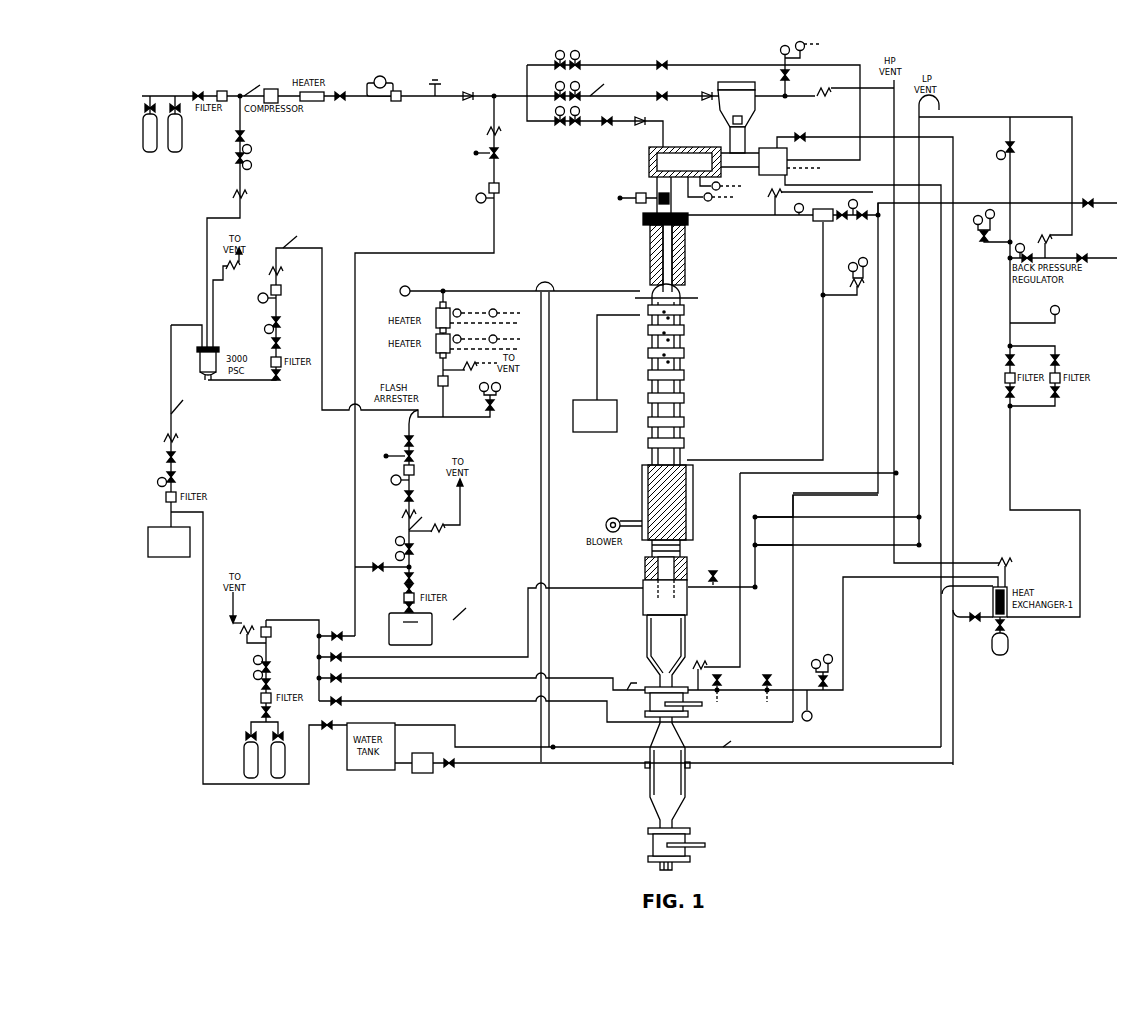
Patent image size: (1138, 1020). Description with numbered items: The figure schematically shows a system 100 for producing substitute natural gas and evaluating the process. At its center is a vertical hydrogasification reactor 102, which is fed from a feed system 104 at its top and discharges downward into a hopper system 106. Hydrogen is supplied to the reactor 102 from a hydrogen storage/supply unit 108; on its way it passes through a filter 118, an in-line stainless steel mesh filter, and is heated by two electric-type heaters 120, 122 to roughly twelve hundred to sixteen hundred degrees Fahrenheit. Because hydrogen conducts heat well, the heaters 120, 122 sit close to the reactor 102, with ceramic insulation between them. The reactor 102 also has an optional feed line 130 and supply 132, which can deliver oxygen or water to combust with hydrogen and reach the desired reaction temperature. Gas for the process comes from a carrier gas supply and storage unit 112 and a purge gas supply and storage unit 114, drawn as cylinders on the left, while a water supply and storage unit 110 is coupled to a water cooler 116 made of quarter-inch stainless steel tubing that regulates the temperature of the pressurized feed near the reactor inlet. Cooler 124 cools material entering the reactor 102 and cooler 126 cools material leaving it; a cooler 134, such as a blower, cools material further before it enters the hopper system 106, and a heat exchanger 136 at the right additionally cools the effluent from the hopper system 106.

The system 100 is at (1008, 70).
The hydrogasification reactor 102 is at (705, 278).
The feed system 104 is at (785, 108).
The hopper system 106 is at (638, 665).
The hydrogen storage/supply unit 108 is at (432, 627).
The water supply and storage unit 110 is at (156, 557).
The carrier gas supply and storage unit 112 is at (150, 150).
The purge gas supply and storage unit 114 is at (250, 775).
The water cooler 116 is at (676, 146).
The filter 118 is at (420, 595).
The heater 120 is at (436, 311).
The heater 122 is at (436, 350).
The cooler 124 is at (690, 252).
The cooler 126 is at (682, 553).
The feed line 130 is at (597, 364).
The supply 132 is at (597, 432).
The cooler 134 is at (697, 502).
The heat exchanger 136 is at (1008, 610).